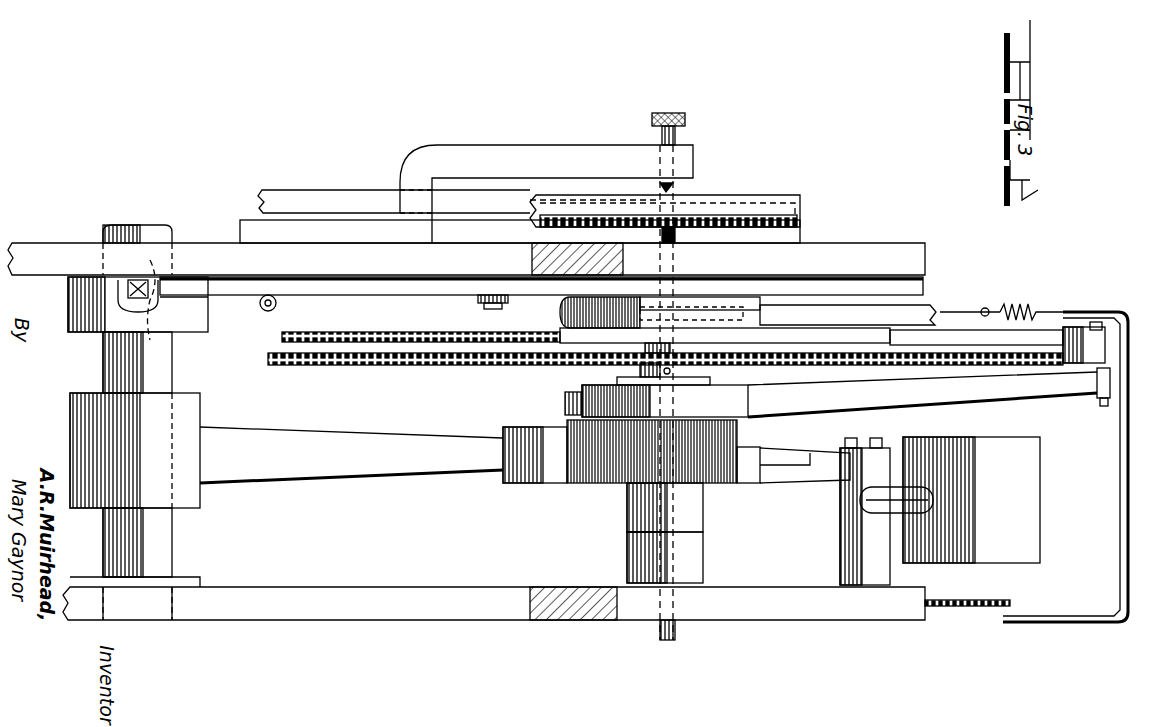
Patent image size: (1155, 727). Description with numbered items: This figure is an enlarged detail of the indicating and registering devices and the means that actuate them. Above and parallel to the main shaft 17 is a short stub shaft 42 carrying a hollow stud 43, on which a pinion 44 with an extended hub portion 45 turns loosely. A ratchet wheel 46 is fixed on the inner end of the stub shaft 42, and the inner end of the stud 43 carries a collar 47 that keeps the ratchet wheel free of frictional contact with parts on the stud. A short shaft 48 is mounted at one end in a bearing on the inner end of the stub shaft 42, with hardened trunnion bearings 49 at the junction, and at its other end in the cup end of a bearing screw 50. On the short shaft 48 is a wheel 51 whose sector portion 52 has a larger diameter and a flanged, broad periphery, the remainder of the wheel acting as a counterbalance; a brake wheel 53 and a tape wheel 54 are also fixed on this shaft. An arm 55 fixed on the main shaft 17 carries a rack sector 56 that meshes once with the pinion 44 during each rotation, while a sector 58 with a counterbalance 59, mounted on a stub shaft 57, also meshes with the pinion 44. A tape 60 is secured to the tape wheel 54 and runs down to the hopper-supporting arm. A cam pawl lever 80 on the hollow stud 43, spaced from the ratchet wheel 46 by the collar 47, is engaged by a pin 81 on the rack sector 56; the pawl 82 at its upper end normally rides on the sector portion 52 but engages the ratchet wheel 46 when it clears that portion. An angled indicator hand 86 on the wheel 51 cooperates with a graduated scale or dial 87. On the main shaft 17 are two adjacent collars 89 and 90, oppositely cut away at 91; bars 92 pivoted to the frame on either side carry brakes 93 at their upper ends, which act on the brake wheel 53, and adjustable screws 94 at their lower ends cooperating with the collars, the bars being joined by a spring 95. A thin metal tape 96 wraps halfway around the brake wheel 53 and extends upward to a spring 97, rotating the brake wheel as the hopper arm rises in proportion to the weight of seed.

The main shaft 17 is at (163, 226).
The stub shaft 42 is at (672, 632).
The hollow stud 43 is at (703, 548).
The pinion 44 is at (705, 470).
The hub portion 45 is at (628, 515).
The ratchet wheel 46 is at (1005, 368).
The collar 47 is at (617, 381).
The short shaft 48 is at (658, 185).
The trunnion bearings 49 is at (672, 350).
The bearing screw 50 is at (686, 120).
The wheel 51 is at (862, 328).
The sector portion 52 is at (965, 330).
The brake wheel 53 is at (760, 300).
The tape wheel 54 is at (772, 205).
The arm 55 is at (385, 472).
The rack sector 56 is at (565, 485).
The stub shaft 57 is at (868, 440).
The sector 58 is at (778, 483).
The counterbalance 59 is at (1040, 520).
The tape 60 is at (358, 200).
The cam pawl lever 80 is at (935, 395).
The pin 81 is at (565, 400).
The pawl 82 is at (1083, 330).
The indicator hand 86 is at (1128, 500).
The graduated scale or dial 87 is at (965, 608).
The collar 89 is at (210, 303).
The collar 90 is at (190, 330).
The cut-away 91 is at (170, 320).
The bars 92 is at (408, 296).
The brakes 93 is at (690, 297).
The adjustable screws 94 is at (135, 278).
The spring 95 is at (268, 312).
The thin metal tape 96 is at (935, 310).
The spring 97 is at (1030, 308).